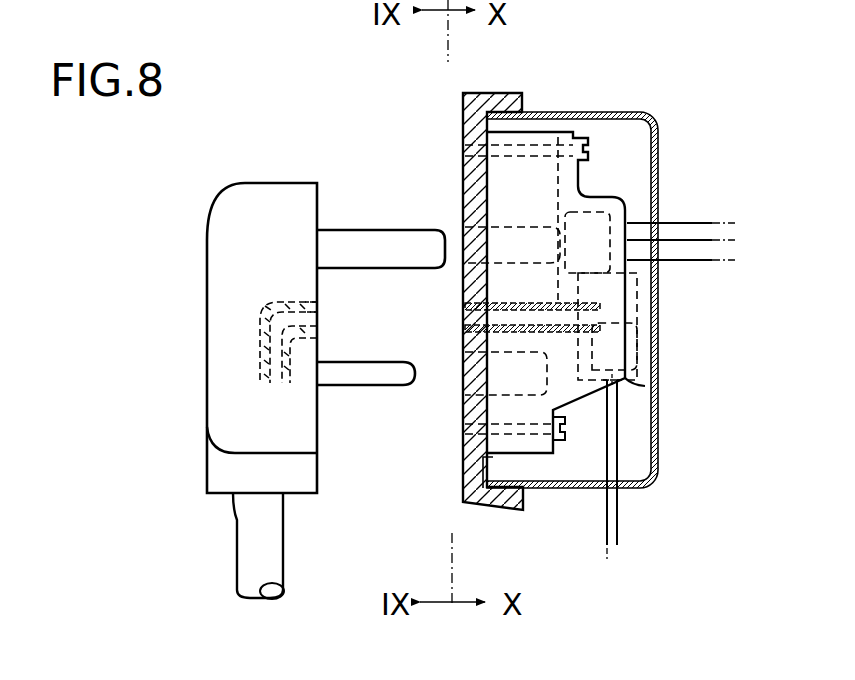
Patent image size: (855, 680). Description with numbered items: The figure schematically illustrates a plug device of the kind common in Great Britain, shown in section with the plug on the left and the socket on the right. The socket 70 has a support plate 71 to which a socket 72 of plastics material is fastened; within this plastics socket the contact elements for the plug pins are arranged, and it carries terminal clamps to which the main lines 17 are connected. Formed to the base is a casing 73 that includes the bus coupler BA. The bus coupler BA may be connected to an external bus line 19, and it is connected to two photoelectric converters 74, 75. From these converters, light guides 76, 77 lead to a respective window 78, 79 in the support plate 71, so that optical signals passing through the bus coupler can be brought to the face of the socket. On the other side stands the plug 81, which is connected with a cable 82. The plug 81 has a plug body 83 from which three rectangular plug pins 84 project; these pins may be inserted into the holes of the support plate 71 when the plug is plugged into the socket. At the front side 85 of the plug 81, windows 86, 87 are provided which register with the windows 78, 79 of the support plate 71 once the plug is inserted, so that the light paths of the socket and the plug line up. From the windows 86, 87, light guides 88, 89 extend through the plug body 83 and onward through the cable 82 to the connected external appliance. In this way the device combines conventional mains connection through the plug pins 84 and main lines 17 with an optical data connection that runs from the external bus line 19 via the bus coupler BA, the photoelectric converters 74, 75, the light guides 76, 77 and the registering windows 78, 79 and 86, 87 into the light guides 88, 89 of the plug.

The socket 70 is at (585, 95).
The support plate 71 is at (472, 180).
The socket of plastics material 72 is at (597, 207).
The casing 73 is at (660, 345).
The photoelectric converter 74 is at (660, 298).
The photoelectric converter 75 is at (660, 366).
The light guide 76 is at (522, 297).
The light guide 77 is at (527, 337).
The window 78 is at (463, 305).
The window 79 is at (465, 328).
The main lines 17 is at (692, 260).
The external bus line 19 is at (618, 510).
The bus coupler BA is at (660, 387).
The plug 81 is at (262, 178).
The cable 82 is at (242, 558).
The plug body 83 is at (227, 272).
The plug pins 84 is at (375, 252).
The front side 85 is at (322, 432).
The window 86 is at (315, 307).
The window 87 is at (337, 365).
The light guide 88 is at (258, 336).
The light guide 89 is at (265, 362).